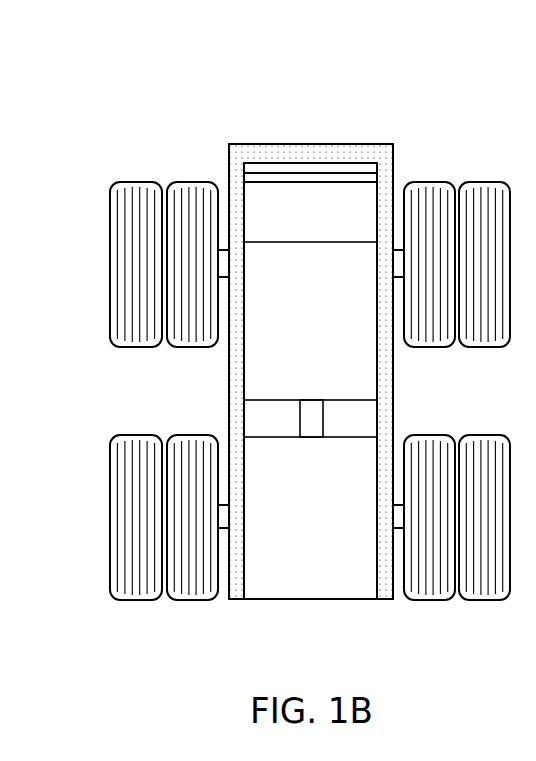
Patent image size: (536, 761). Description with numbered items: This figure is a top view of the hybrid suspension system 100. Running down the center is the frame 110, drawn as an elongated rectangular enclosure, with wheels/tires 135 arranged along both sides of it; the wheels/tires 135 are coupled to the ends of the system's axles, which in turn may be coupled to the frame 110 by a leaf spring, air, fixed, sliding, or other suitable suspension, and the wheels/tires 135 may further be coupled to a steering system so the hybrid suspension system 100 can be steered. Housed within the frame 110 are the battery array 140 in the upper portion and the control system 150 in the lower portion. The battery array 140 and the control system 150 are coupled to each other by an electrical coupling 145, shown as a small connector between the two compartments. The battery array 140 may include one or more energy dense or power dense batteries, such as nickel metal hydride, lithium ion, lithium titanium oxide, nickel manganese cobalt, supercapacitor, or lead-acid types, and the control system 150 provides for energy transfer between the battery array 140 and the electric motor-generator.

The hybrid suspension system 100 is at (103, 98).
The frame 110 is at (336, 143).
The wheels/tires 135 is at (96, 607).
The battery array 140 is at (310, 321).
The electrical coupling 145 is at (323, 417).
The control system 150 is at (310, 518).